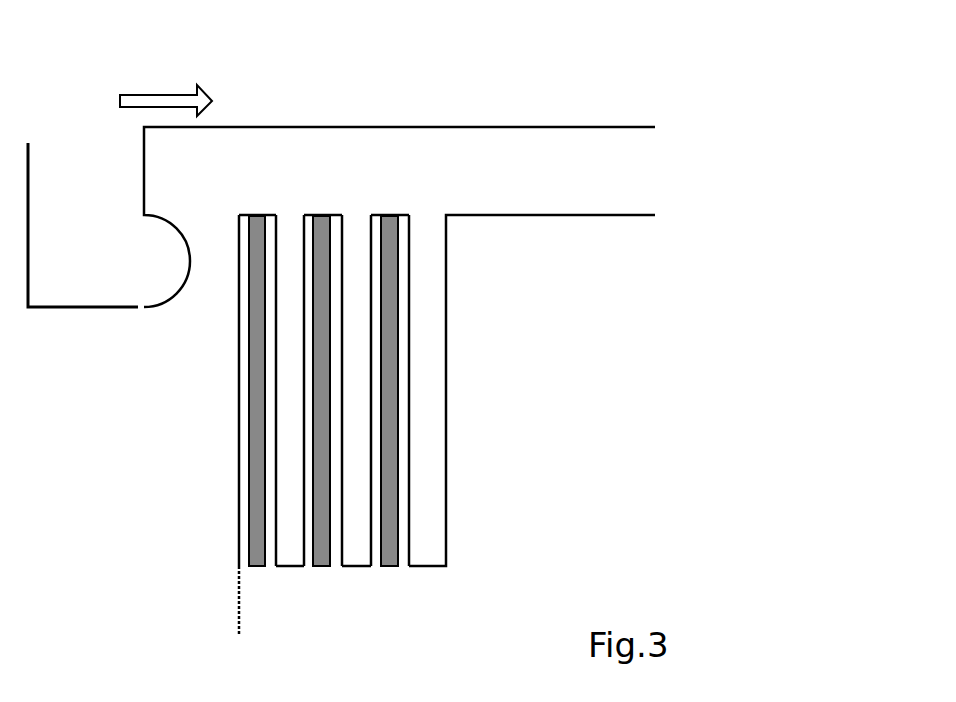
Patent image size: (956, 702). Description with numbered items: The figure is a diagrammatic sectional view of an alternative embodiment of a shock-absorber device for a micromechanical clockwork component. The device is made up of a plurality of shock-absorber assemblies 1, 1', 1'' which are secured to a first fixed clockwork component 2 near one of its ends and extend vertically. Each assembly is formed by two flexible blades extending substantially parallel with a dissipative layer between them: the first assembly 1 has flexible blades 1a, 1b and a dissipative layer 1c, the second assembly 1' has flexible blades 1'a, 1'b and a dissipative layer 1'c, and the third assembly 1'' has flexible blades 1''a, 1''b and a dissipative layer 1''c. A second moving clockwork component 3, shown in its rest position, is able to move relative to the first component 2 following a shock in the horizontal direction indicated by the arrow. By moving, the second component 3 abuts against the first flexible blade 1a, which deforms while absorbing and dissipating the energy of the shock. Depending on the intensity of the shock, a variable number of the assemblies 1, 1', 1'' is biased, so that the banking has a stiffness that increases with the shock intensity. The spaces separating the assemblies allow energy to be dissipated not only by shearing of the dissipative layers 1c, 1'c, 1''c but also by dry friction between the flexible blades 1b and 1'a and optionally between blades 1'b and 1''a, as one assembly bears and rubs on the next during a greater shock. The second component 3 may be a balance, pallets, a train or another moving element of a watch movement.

The shock-absorber assembly 1 is at (191, 356).
The second shock-absorber assembly 1' is at (233, 355).
The third shock-absorber assembly 1'' is at (475, 355).
The first flexible blade 1a is at (240, 355).
The second flexible blade 1b is at (270, 407).
The dissipative layer 1c is at (254, 381).
The first flexible blade 1'a is at (216, 390).
The second flexible blade 1'b is at (241, 390).
The dissipative layer 1'c is at (227, 391).
The first flexible blade 1''a is at (454, 390).
The second flexible blade 1''b is at (490, 390).
The dissipative layer 1''c is at (472, 391).
The first fixed clockwork component 2 is at (559, 266).
The second moving clockwork component 3 is at (88, 248).